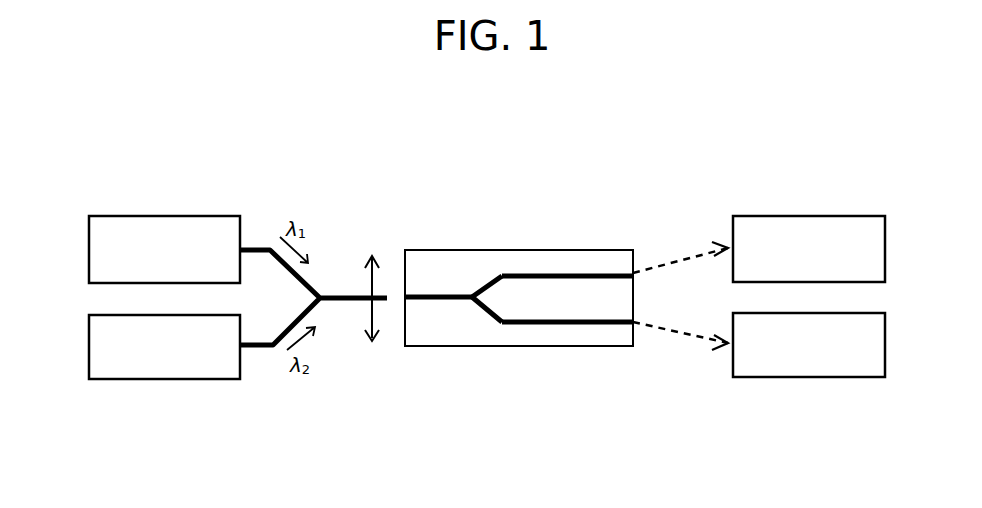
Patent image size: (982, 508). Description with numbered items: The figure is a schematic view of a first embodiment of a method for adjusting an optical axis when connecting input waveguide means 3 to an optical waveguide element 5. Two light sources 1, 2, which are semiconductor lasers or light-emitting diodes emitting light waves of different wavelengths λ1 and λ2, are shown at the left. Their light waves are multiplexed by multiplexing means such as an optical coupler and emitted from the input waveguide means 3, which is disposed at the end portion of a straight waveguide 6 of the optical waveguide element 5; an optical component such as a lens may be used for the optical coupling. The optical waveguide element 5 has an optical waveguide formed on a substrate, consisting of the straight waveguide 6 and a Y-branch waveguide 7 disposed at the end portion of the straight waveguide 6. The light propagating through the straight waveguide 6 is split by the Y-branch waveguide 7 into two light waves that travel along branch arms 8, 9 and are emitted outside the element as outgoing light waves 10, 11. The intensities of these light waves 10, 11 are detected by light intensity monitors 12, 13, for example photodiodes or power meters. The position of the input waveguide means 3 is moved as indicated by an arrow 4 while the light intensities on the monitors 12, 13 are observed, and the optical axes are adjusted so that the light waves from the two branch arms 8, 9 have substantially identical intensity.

The light source 1 is at (155, 232).
The light source 2 is at (155, 362).
The input waveguide means 3 is at (355, 296).
The arrow 4 is at (365, 318).
The optical waveguide element 5 is at (490, 231).
The straight waveguide 6 is at (448, 300).
The Y-branch waveguide 7 is at (510, 296).
The branch arm 8 is at (597, 275).
The branch arm 9 is at (595, 323).
The light wave 10 is at (685, 258).
The light wave 11 is at (683, 335).
The light intensity monitor 12 is at (817, 230).
The light intensity monitor 13 is at (817, 360).